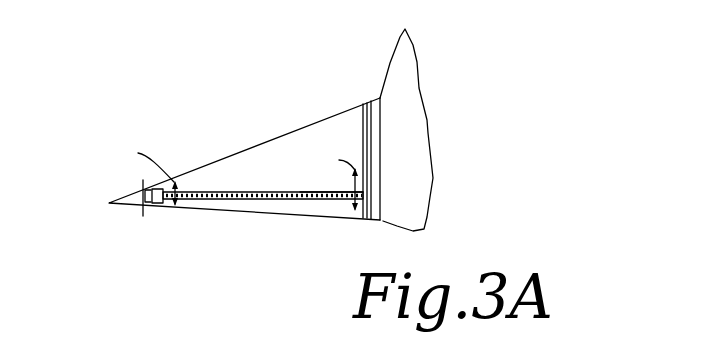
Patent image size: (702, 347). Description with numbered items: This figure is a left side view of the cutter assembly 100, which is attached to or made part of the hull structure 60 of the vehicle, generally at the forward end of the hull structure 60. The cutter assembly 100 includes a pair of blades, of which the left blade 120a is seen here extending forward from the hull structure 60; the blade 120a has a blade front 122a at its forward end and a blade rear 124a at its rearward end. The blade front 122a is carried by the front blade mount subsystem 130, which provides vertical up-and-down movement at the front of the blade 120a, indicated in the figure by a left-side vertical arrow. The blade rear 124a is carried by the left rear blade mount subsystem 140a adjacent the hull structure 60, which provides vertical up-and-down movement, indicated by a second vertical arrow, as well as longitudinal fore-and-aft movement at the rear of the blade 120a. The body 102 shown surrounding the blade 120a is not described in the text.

The hull structure 60 is at (422, 138).
The cutter assembly 100 is at (179, 150).
The wedge body 102 is at (233, 152).
The blade 120a is at (224, 199).
The blade front 122a is at (167, 208).
The blade rear 124a is at (335, 199).
The front blade mount subsystem 130 is at (151, 211).
The rear blade mount subsystem 140a is at (362, 130).